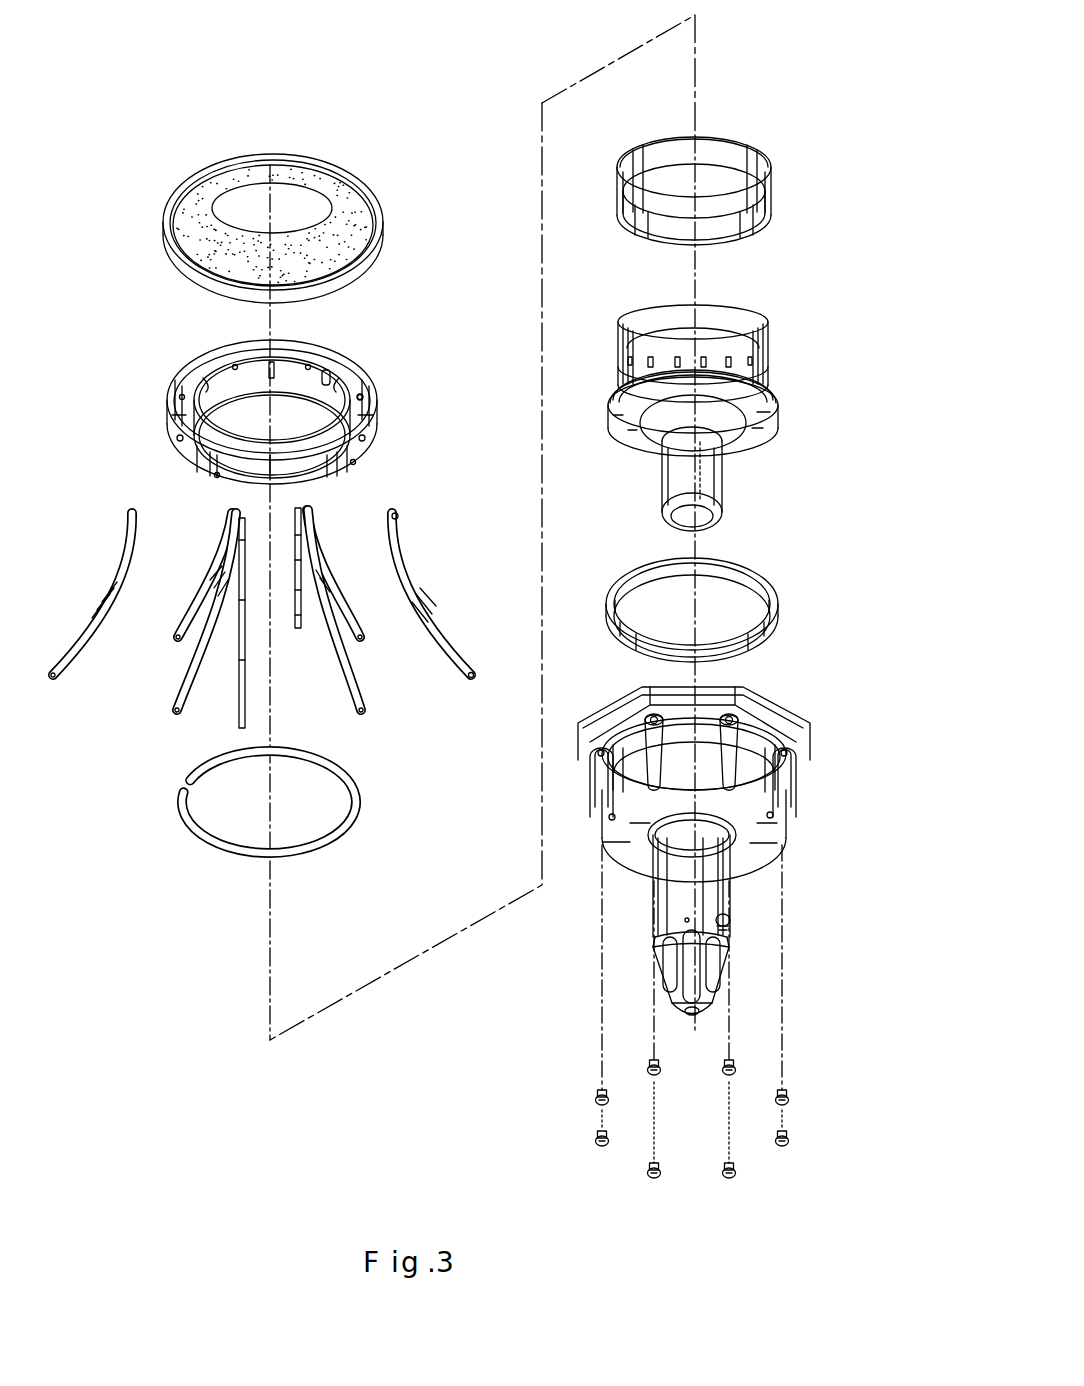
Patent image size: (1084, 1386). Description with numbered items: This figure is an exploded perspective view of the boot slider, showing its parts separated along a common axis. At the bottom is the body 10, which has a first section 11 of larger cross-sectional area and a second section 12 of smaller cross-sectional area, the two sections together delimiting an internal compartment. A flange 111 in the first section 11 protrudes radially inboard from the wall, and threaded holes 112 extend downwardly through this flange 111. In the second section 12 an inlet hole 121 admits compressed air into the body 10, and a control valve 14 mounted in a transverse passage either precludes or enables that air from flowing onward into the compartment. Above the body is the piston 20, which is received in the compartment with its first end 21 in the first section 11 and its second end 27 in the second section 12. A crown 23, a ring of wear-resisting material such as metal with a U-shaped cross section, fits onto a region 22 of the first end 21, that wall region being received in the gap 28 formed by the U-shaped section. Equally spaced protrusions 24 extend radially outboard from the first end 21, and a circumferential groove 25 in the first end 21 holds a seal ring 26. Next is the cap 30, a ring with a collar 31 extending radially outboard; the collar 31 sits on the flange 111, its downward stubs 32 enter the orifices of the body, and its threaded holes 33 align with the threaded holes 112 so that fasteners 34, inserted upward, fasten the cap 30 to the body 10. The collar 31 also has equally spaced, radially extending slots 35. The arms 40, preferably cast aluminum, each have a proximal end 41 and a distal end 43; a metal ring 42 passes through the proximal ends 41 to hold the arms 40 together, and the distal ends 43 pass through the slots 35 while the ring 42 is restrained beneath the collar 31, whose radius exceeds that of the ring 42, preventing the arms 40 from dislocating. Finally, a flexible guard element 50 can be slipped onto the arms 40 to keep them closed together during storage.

The body 10 is at (695, 862).
The first section 11 is at (736, 784).
The flange 111 is at (800, 732).
The threaded holes 112 is at (803, 757).
The second section 12 is at (712, 888).
The control valve 14 is at (730, 923).
The inlet hole 121 is at (708, 1012).
The piston 20 is at (781, 418).
The first end 21 is at (770, 378).
The region 22 is at (760, 345).
The crown 23 is at (732, 191).
The protrusions 24 is at (768, 388).
The groove 25 is at (770, 396).
The seal ring 26 is at (770, 590).
The second end 27 is at (708, 488).
The gap 28 is at (757, 172).
The cap 30 is at (332, 410).
The collar 31 is at (355, 368).
The stubs 32 is at (331, 377).
The threaded holes 33 is at (363, 397).
The fasteners 34 is at (790, 1100).
The slots 35 is at (311, 447).
The arms 40 is at (276, 616).
The proximal end 41 is at (465, 673).
The ring 42 is at (360, 801).
The distal end 43 is at (398, 525).
The flexible guard element 50 is at (355, 195).